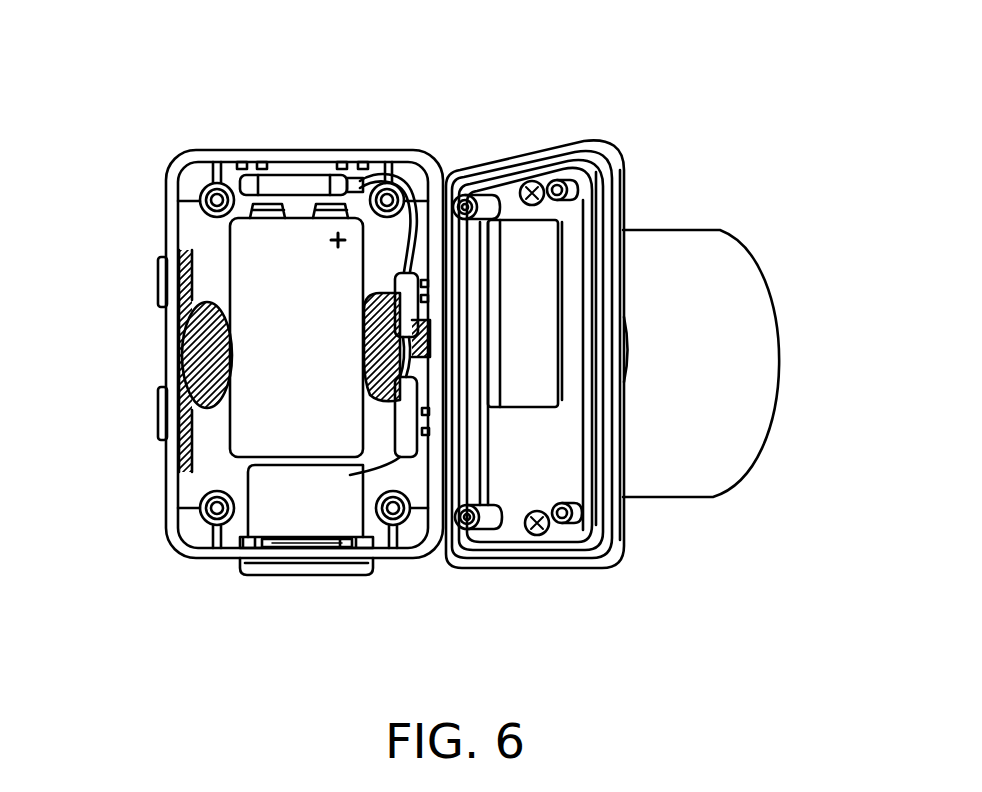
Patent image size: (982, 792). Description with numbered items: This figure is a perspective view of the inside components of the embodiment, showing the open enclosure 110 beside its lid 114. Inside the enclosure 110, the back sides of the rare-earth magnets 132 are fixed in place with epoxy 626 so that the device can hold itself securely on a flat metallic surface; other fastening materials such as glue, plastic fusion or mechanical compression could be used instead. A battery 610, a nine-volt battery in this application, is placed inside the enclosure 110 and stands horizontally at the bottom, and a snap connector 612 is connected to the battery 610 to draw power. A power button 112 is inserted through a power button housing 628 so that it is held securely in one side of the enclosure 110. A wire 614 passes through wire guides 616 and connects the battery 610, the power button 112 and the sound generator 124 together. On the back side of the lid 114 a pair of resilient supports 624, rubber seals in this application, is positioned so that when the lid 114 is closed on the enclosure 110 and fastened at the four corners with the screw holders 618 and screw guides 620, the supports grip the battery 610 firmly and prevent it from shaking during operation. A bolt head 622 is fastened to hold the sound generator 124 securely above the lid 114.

The enclosure 110 is at (197, 181).
The power button 112 is at (296, 563).
The lid 114 is at (537, 462).
The sound generator 124 is at (710, 300).
The rare-earth magnets 132 is at (160, 281).
The battery 610 is at (263, 418).
The snap connector 612 is at (297, 185).
The wire 614 is at (393, 182).
The wire guides 616 is at (412, 427).
The screw holders 618 is at (218, 187).
The screw guides 620 is at (466, 204).
The bolt head 622 is at (534, 184).
The resilient supports 624 is at (541, 343).
The epoxy 626 is at (365, 318).
The power button housing 628 is at (303, 490).